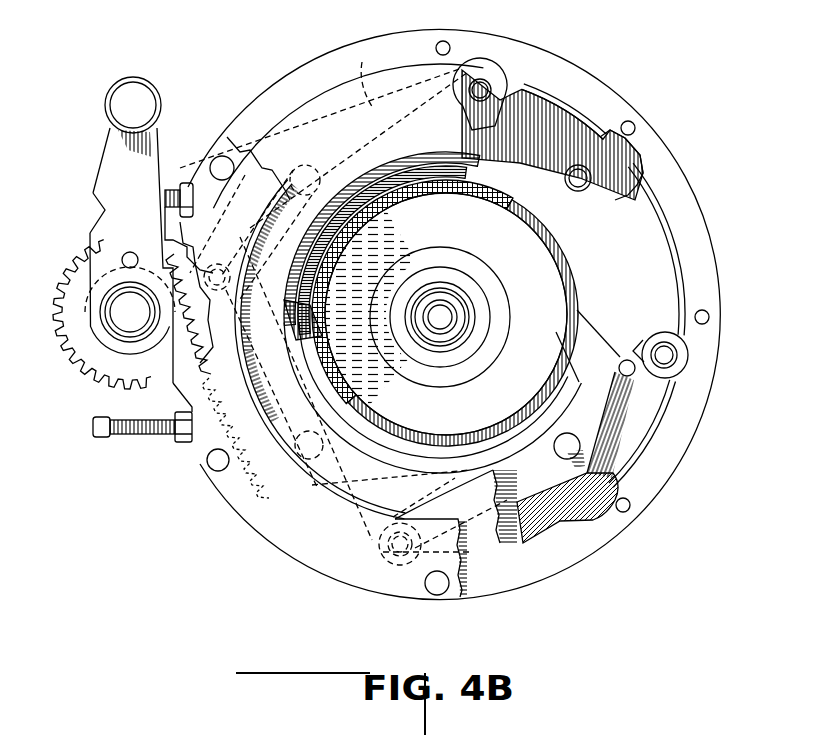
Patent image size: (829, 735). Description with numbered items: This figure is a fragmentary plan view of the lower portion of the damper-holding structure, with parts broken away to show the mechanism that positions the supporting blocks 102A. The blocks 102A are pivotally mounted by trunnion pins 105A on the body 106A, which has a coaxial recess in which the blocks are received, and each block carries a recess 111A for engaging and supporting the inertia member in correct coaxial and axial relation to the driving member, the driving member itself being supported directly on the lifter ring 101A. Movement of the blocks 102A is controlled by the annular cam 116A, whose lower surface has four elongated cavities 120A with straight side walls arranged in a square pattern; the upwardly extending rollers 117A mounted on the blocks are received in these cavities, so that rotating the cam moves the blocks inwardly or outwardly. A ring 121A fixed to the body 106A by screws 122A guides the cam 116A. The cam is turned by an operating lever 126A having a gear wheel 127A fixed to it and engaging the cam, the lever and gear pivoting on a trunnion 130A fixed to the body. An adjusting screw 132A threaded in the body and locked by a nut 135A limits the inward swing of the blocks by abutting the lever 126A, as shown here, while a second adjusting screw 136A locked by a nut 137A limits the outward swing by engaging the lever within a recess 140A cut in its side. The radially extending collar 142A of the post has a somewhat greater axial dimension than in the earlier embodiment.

The lifter ring 101A is at (530, 246).
The supporting blocks 102A is at (414, 166).
The trunnion pins 105A is at (483, 88).
The body 106A is at (250, 106).
The recess 111A is at (565, 373).
The annular cam 116A is at (472, 505).
The rollers 117A is at (305, 176).
The elongated cavities 120A is at (503, 563).
The ring 121A is at (331, 566).
The screws 122A is at (430, 594).
The operating lever 126A is at (102, 180).
The gear wheel 127A is at (87, 355).
The trunnion 130A is at (150, 323).
The adjusting screw 132A is at (168, 187).
The nut 135A is at (183, 183).
The adjusting screw 136A is at (143, 437).
The nut 137A is at (187, 443).
The recess 140A is at (95, 212).
The radially extending collar 142A is at (488, 272).